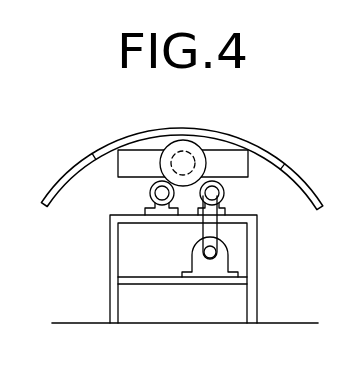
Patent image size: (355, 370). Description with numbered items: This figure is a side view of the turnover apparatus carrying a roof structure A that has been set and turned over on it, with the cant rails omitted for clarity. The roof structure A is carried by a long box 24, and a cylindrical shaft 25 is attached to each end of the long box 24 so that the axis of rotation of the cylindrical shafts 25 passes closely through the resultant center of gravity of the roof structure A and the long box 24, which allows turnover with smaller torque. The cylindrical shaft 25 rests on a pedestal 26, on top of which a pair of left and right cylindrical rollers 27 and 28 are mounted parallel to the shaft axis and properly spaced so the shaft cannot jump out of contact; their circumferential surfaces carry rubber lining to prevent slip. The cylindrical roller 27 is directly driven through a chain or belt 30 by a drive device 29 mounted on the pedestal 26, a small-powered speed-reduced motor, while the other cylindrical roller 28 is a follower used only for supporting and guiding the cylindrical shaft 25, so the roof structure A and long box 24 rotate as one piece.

The roof structure A is at (268, 148).
The long box 24 is at (133, 160).
The cylindrical shaft 25 is at (185, 147).
The pedestal 26 is at (108, 260).
The cylindrical roller 27 is at (223, 192).
The cylindrical roller 28 is at (145, 192).
The drive device 29 is at (210, 267).
The chain or belt 30 is at (218, 232).